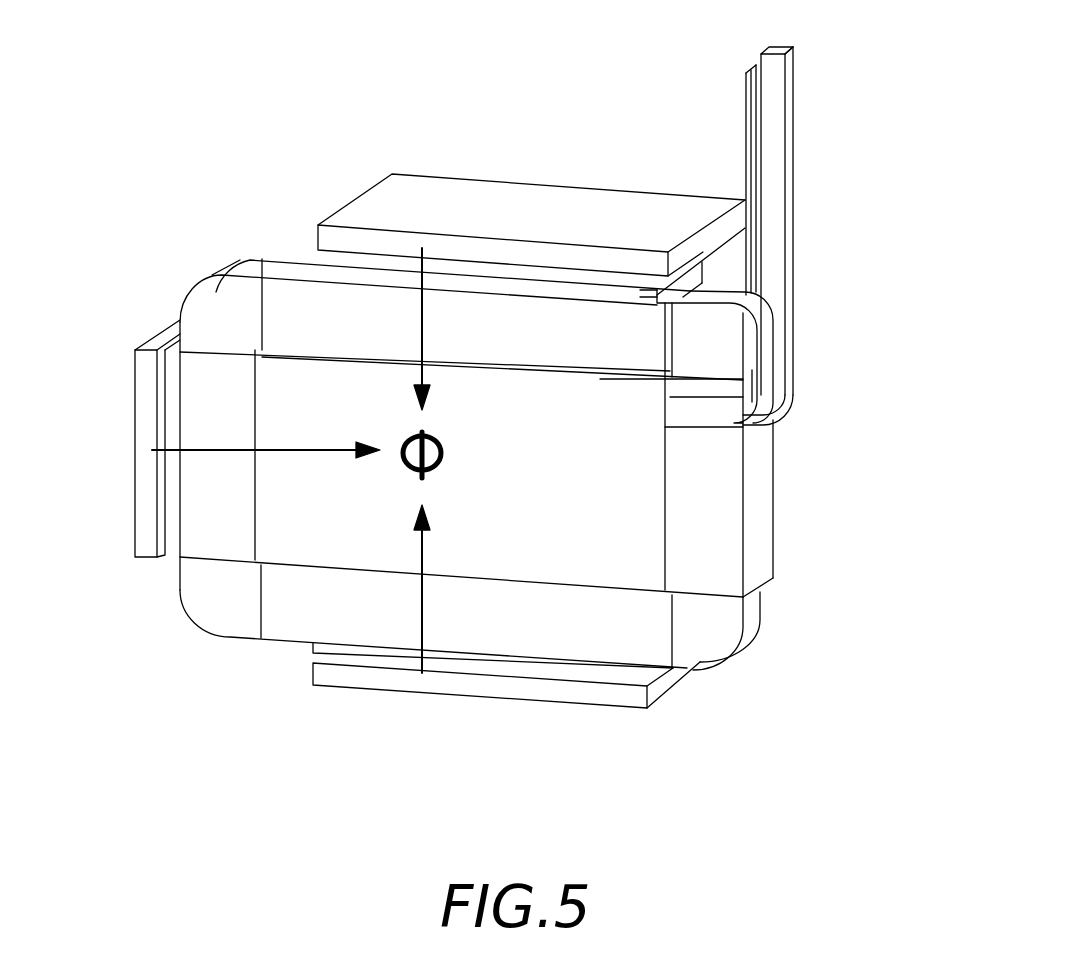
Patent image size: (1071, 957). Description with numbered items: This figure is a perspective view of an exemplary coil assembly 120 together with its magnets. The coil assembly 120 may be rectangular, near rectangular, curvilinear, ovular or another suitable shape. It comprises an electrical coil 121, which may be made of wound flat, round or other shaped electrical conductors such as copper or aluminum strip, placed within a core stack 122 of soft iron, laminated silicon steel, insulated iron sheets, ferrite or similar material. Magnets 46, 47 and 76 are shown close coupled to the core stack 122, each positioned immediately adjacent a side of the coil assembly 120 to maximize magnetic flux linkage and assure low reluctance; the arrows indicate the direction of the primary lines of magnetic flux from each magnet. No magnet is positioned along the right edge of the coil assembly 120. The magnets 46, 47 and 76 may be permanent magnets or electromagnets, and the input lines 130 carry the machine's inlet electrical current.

The coil assembly 120 is at (892, 229).
The electrical coil 121 is at (703, 497).
The core stack 122 is at (633, 470).
The input lines 130 is at (777, 157).
The magnet 46 is at (543, 200).
The magnet 76 is at (458, 697).
The magnet 47 is at (133, 423).